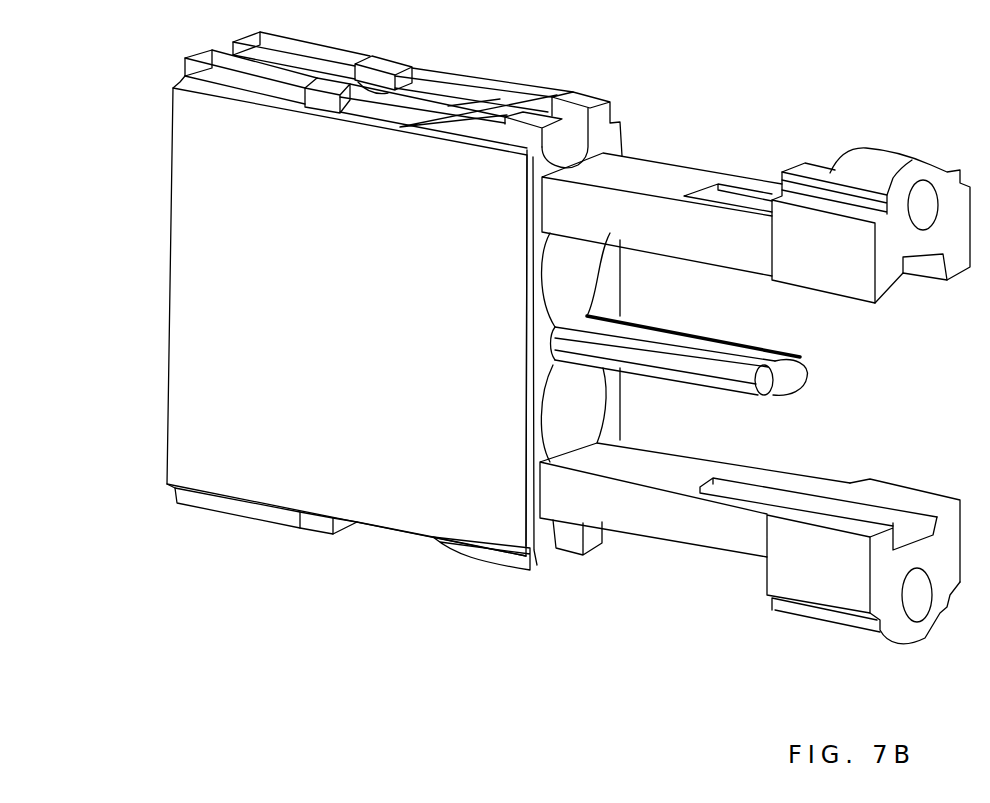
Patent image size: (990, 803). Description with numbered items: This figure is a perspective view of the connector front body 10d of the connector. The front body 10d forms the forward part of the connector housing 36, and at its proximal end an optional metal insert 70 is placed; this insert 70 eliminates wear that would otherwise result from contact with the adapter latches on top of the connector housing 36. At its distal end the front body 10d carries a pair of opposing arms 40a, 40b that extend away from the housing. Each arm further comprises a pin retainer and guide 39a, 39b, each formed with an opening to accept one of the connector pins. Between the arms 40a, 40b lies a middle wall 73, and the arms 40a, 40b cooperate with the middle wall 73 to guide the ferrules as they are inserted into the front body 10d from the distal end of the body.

The connector front body 10d is at (185, 530).
The connector housing 36 is at (290, 468).
The metal insert 70 is at (390, 62).
The arm 40a is at (672, 175).
The pin retainer and guide 39a is at (853, 163).
The middle wall 73 is at (770, 378).
The arm 40b is at (598, 512).
The pin retainer and guide 39b is at (807, 580).